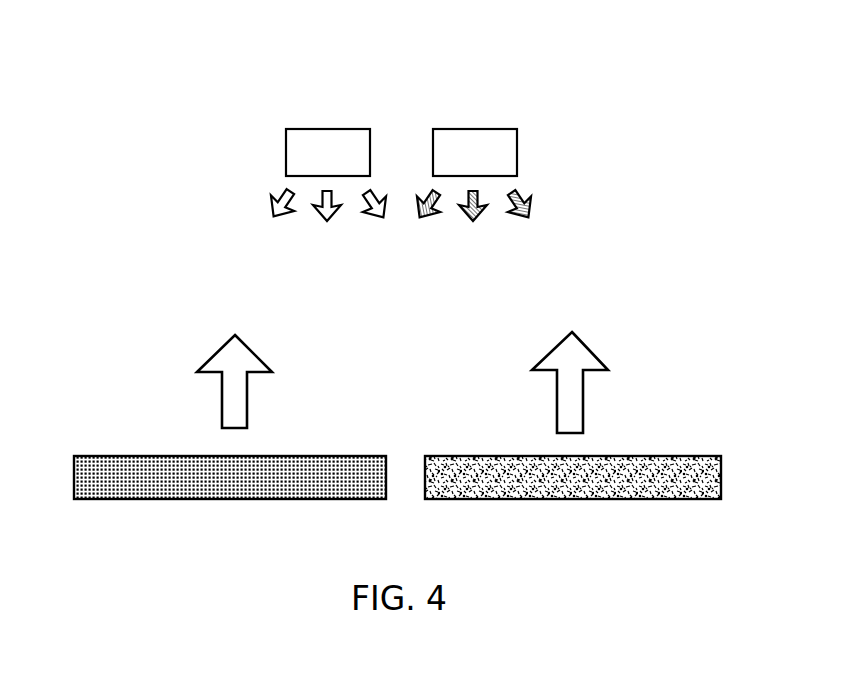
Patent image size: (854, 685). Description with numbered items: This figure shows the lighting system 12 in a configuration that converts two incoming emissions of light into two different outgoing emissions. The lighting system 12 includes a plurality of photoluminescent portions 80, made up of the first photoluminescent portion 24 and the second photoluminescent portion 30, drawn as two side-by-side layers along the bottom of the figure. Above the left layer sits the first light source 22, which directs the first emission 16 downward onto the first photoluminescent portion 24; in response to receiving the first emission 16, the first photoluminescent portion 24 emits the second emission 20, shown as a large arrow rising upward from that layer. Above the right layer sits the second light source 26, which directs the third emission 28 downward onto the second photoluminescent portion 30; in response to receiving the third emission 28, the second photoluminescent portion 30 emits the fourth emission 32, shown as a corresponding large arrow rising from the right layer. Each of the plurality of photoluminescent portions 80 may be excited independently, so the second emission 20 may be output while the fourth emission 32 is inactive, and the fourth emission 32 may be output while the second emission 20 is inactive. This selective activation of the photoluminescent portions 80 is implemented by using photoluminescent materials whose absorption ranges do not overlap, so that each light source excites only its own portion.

The lighting system 12 is at (535, 73).
The first emission 16 is at (263, 233).
The second emission 20 is at (223, 395).
The first light source 22 is at (340, 163).
The first photoluminescent portion 24 is at (121, 493).
The second light source 26 is at (487, 163).
The third emission 28 is at (533, 234).
The second photoluminescent portion 30 is at (679, 498).
The fourth emission 32 is at (578, 390).
The plurality of photoluminescent portions 80 is at (438, 483).